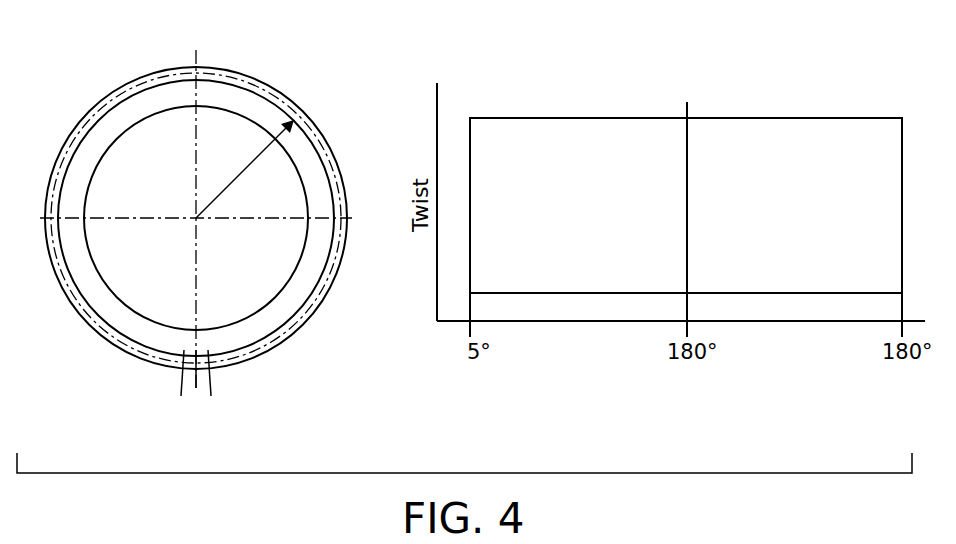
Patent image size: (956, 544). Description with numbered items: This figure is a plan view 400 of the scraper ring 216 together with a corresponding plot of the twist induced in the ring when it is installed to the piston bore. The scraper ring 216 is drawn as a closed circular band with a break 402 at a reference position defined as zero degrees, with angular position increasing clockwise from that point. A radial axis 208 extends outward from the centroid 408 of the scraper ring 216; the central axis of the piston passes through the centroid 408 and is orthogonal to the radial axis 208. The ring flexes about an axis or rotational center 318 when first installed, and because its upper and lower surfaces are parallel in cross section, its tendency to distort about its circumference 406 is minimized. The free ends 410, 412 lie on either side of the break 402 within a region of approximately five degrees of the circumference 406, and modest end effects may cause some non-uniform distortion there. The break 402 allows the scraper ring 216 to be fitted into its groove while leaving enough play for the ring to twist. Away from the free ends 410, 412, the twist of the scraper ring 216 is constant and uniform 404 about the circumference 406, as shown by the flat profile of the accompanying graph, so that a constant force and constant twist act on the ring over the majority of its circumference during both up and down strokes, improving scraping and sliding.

The plan view 400 is at (310, 90).
The scraper ring 216 is at (152, 83).
The rotational center 318 is at (137, 355).
The circumference 406 is at (130, 125).
The centroid 408 is at (194, 216).
The radial axis 208 is at (241, 175).
The break 402 is at (191, 376).
The free end 410 is at (178, 379).
The free end 412 is at (215, 379).
The uniform twist 404 is at (821, 117).